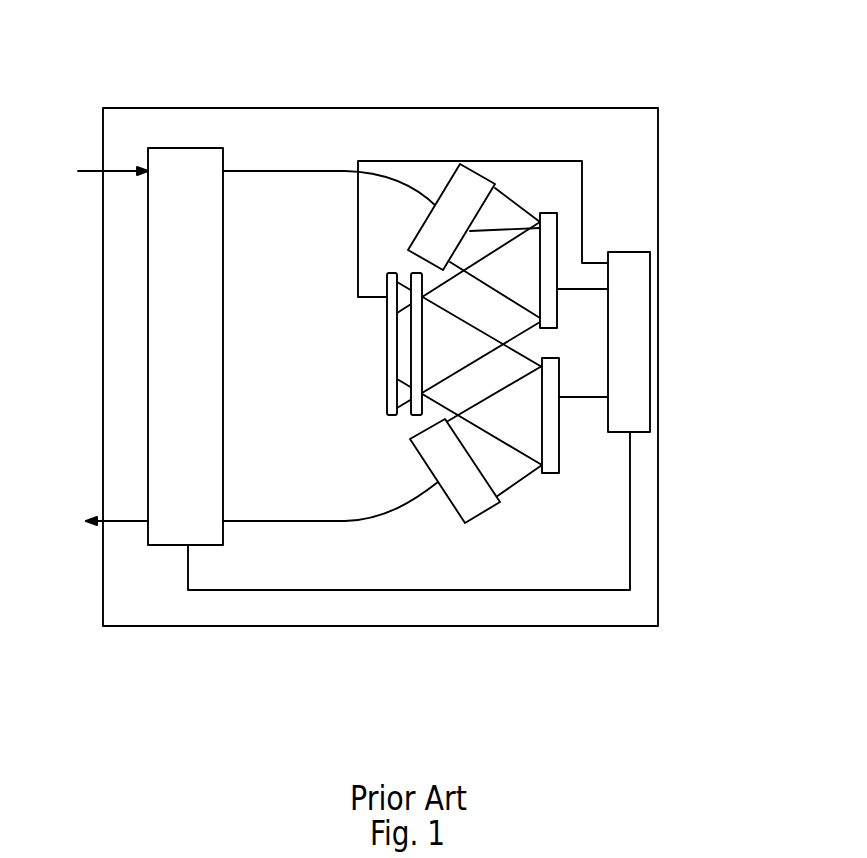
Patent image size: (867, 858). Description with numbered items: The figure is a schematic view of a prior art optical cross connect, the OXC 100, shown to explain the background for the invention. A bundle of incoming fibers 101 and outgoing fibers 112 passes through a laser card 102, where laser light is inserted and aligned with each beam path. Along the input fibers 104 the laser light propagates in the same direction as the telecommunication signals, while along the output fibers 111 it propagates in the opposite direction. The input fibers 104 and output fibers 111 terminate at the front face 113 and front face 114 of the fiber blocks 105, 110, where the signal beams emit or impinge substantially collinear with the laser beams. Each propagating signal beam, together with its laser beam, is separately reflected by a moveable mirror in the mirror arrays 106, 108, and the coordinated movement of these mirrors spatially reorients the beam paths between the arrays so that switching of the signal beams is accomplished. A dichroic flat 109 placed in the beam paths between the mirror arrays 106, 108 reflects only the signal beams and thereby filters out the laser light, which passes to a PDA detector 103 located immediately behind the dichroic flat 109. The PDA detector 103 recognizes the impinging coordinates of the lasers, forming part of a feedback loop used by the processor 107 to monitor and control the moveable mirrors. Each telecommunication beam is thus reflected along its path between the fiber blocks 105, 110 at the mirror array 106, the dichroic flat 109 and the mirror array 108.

The OXC 100 is at (103, 370).
The incoming fibers 101 is at (95, 172).
The laser card 102 is at (197, 148).
The PDA detector 103 is at (387, 273).
The input fibers 104 is at (397, 180).
The fiber block 105 is at (483, 172).
The mirror array 106 is at (557, 213).
The processor 107 is at (650, 279).
The mirror array 108 is at (559, 427).
The dichroic flat 109 is at (423, 350).
The fiber block 110 is at (482, 515).
The output fibers 111 is at (400, 507).
The outgoing fibers 112 is at (95, 522).
The front face 113 is at (557, 226).
The front face 114 is at (468, 455).